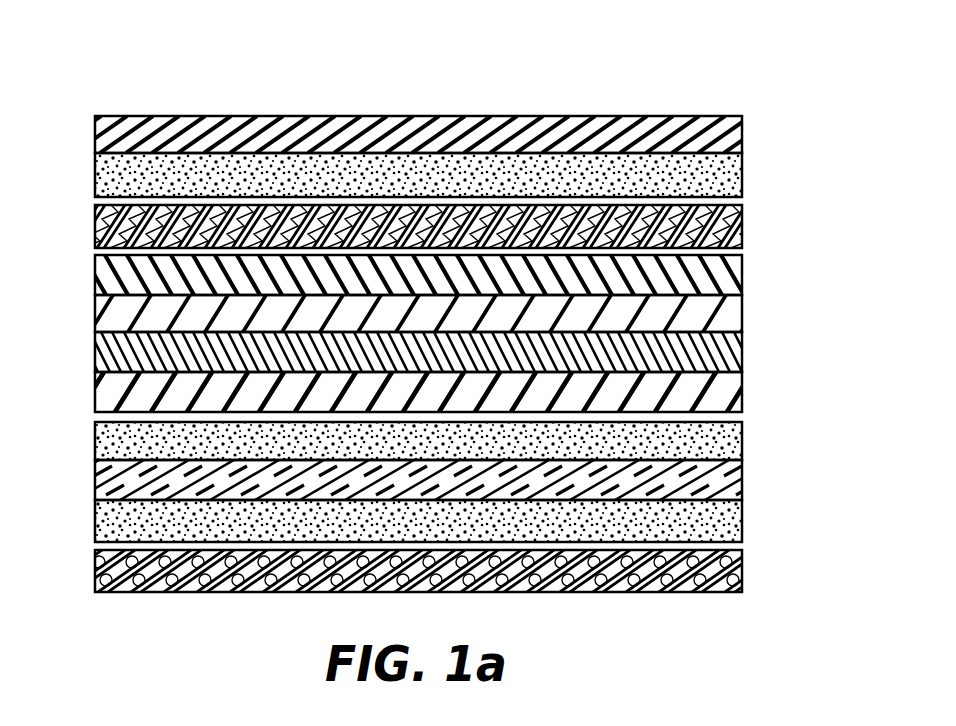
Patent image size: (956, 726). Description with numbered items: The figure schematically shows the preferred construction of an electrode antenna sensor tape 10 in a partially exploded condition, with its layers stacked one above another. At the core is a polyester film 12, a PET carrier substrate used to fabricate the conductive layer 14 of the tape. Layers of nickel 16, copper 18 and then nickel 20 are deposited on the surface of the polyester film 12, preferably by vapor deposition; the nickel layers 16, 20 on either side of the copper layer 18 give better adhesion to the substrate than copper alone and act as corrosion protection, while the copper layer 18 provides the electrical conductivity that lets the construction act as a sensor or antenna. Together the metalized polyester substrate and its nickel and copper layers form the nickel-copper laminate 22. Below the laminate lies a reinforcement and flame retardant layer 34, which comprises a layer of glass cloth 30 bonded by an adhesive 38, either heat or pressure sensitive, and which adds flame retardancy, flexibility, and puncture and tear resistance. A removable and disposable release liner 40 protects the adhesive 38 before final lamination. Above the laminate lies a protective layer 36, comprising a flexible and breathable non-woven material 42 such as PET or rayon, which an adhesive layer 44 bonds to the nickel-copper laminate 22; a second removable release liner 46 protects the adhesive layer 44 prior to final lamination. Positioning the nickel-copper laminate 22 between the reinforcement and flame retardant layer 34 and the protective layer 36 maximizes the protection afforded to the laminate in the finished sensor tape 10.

The sensor tape 10 is at (258, 78).
The polyester film 12 is at (95, 388).
The conductive layer 14 is at (762, 258).
The nickel layer 16 is at (95, 350).
The copper layer 18 is at (95, 312).
The nickel layer 20 is at (95, 274).
The nickel-copper laminate 22 is at (822, 258).
The glass cloth 30 is at (95, 480).
The reinforcement and flame retardant layer 34 is at (762, 423).
The protective layer 36 is at (762, 117).
The adhesive 38 is at (95, 442).
The release liner 40 is at (95, 575).
The non-woven material 42 is at (95, 134).
The adhesive layer 44 is at (95, 175).
The release liner 46 is at (95, 224).